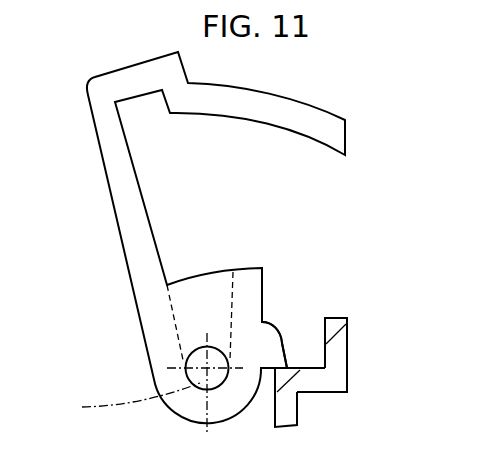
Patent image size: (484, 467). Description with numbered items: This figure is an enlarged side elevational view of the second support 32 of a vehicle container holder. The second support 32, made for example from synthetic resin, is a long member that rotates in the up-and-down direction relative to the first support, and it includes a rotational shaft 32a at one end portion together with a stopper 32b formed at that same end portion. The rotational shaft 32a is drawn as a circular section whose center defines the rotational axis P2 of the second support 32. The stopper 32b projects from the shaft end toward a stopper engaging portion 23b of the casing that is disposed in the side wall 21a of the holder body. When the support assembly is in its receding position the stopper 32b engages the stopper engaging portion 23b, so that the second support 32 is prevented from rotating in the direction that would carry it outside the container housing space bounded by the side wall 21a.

The second support 32 is at (312, 125).
The rotational shaft 32a is at (203, 384).
The stopper 32b is at (273, 355).
The stopper engaging portion 23b is at (315, 382).
The side wall 21a is at (287, 418).
The rotational axis P2 is at (124, 402).